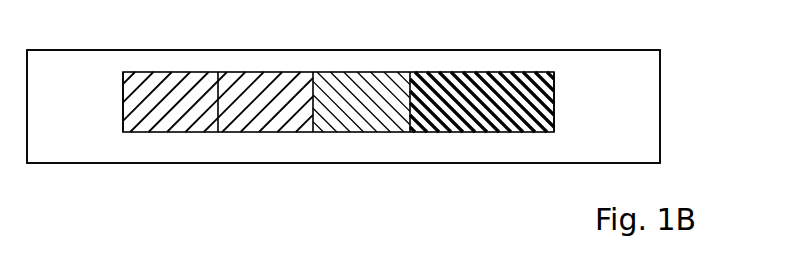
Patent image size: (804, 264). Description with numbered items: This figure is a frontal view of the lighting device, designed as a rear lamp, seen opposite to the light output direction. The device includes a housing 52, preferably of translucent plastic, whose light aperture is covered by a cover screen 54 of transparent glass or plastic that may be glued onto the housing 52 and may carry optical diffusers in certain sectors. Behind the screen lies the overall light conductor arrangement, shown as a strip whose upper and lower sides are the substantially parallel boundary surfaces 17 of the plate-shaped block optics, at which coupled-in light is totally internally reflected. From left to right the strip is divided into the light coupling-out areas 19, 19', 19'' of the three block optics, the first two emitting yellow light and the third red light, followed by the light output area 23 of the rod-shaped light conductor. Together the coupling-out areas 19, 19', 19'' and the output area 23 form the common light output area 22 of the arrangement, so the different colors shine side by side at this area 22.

The boundary surfaces 17 is at (148, 66).
The light coupling-out area 19 is at (170, 145).
The light coupling-out area 19' is at (265, 145).
The light coupling-out area 19'' is at (361, 145).
The light output area 22 is at (554, 102).
The light output area 23 is at (477, 108).
The housing 52 is at (532, 163).
The cover screen 54 is at (650, 148).